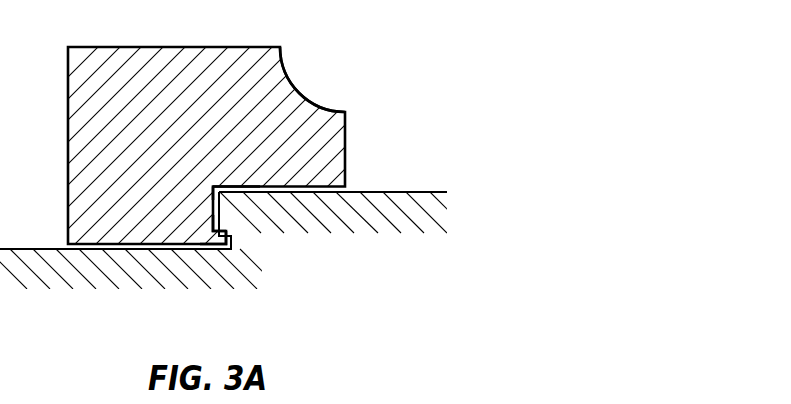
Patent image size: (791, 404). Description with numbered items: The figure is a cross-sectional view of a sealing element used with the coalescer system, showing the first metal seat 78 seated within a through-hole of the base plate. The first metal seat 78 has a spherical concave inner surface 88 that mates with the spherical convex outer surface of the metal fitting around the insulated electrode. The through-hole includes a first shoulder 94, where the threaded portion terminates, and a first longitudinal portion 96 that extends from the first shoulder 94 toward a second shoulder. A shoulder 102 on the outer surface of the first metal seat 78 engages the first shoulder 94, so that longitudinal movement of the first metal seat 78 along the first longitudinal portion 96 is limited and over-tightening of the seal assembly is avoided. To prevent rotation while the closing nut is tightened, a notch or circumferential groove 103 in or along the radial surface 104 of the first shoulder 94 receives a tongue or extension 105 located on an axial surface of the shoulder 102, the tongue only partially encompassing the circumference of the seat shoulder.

The first metal seat 78 is at (161, 62).
The spherical concave inner surface 88 is at (283, 100).
The first longitudinal portion 96 is at (313, 203).
The shoulder 102 is at (195, 183).
The tongue or extension 105 is at (213, 241).
The radial surface 104 is at (223, 208).
The first shoulder 94 is at (260, 244).
The notch or circumferential groove 103 is at (233, 243).